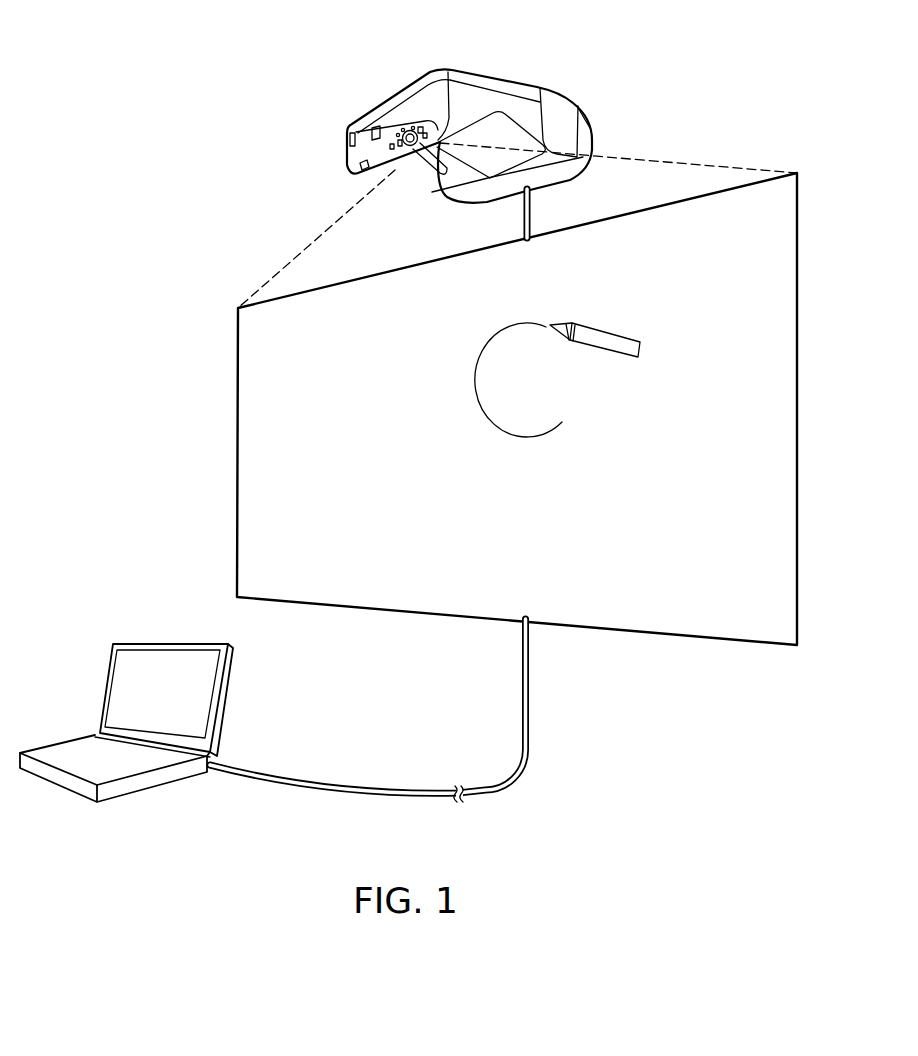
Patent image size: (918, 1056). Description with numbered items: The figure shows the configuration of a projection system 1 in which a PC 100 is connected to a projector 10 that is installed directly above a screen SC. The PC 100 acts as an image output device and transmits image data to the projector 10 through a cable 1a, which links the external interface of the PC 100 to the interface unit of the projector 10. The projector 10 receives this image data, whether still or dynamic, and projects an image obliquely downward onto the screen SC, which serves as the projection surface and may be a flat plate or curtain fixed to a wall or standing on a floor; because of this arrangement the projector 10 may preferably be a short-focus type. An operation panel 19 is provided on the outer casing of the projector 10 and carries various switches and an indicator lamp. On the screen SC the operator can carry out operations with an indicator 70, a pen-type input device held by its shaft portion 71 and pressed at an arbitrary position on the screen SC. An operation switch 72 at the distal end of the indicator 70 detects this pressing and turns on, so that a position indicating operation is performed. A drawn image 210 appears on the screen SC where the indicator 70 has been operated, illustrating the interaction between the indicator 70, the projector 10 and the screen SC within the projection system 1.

The projection system 1 is at (272, 94).
The cable 1a is at (520, 776).
The projector 10 is at (469, 125).
The operation panel 19 is at (436, 122).
The indicator 70 is at (588, 335).
The shaft portion 71 is at (623, 357).
The operation switch 72 is at (552, 323).
The PC 100 is at (170, 773).
The drawn image 210 is at (533, 440).
The screen SC is at (238, 432).